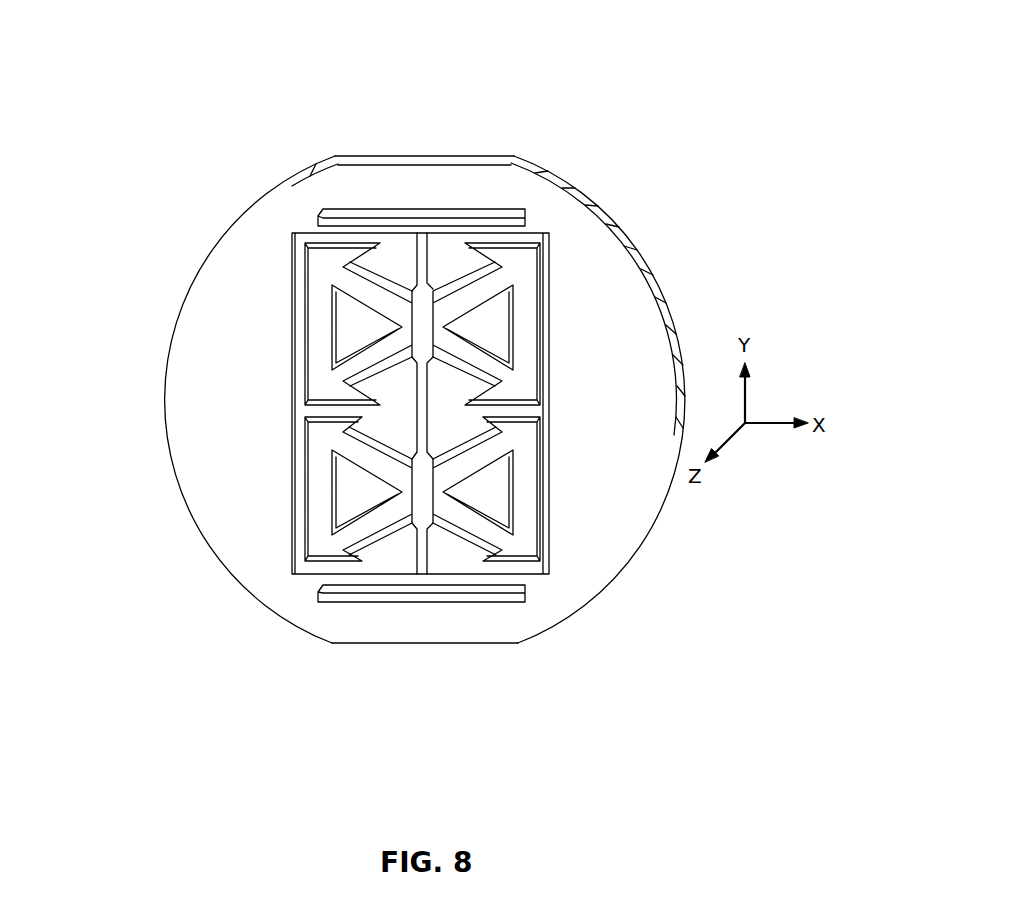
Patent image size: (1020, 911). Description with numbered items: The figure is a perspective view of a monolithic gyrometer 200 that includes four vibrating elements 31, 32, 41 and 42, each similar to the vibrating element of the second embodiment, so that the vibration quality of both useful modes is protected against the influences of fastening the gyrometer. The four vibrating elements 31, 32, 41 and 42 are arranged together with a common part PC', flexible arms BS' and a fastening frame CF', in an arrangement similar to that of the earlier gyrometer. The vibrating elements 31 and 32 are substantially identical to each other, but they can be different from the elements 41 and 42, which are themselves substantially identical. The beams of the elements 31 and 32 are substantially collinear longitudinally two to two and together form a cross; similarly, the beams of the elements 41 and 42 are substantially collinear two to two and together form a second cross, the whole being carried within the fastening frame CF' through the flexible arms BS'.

The gyrometer 200 is at (563, 105).
The vibrating element 31 is at (300, 243).
The vibrating element 32 is at (547, 235).
The vibrating element 41 is at (318, 567).
The vibrating element 42 is at (532, 563).
The flexible arms BS' is at (421, 410).
The common part PC' is at (254, 403).
The fastening frame CF' is at (373, 399).